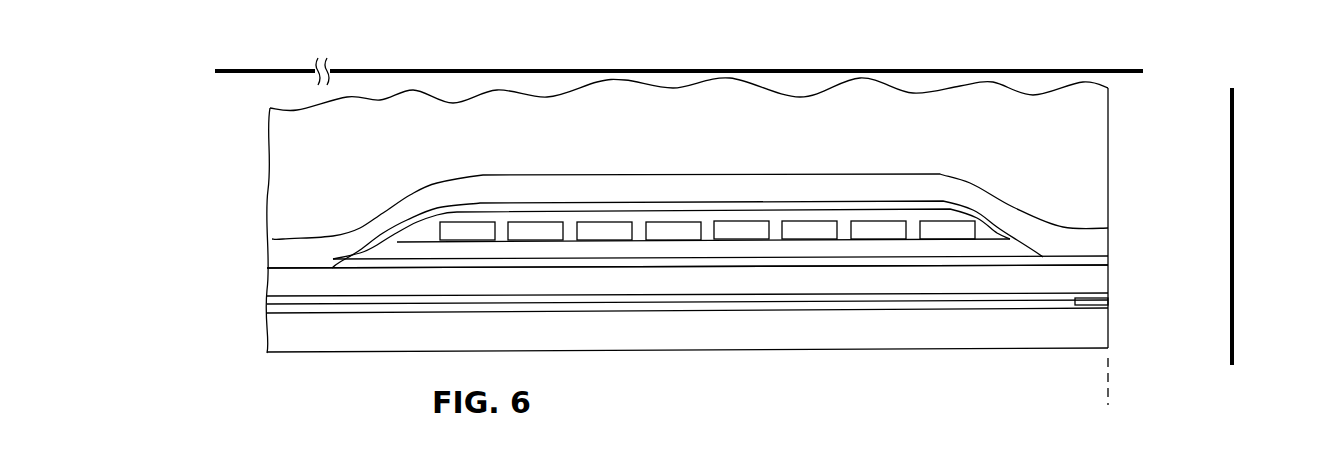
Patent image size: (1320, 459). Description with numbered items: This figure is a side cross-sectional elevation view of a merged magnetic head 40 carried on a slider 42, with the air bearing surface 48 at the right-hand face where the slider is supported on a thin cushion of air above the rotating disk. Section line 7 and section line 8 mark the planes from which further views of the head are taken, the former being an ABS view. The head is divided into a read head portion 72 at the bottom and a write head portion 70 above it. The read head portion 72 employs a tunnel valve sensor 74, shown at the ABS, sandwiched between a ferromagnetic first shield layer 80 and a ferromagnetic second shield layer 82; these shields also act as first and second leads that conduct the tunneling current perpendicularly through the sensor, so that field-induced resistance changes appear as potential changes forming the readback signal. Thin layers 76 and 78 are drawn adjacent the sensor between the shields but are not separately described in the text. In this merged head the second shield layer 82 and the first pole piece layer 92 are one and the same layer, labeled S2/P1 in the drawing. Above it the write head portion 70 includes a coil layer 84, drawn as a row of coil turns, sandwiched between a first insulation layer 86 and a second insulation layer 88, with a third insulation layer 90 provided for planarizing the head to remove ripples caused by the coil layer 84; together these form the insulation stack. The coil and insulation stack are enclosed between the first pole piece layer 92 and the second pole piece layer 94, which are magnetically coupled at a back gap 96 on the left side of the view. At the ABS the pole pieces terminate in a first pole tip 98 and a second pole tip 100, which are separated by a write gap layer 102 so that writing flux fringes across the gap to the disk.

The section line 7- 7 is at (1248, 96).
The section line 8- 8 is at (222, 60).
The merged magnetic head 40 is at (245, 118).
The slider 42 is at (1092, 122).
The air bearing surface 48 is at (1108, 392).
The write head portion 70 is at (257, 162).
The read head portion 72 is at (257, 354).
The tunnel valve sensor 74 is at (1108, 301).
The first gap layer 76 is at (758, 310).
The second gap layer 78 is at (724, 296).
The first shield layer 80 is at (838, 335).
The second shield layer 82 is at (945, 280).
The first pole piece layer 92 is at (687, 266).
The coil layer 84 is at (738, 227).
The first insulation layer 86 is at (610, 250).
The second insulation layer 88 is at (990, 232).
The third insulation layer 90 is at (510, 208).
The second pole piece layer 94 is at (855, 185).
The back gap 96 is at (303, 268).
The first pole tip 98 is at (1108, 280).
The second pole tip 100 is at (1102, 238).
The write gap layer 102 is at (1108, 260).